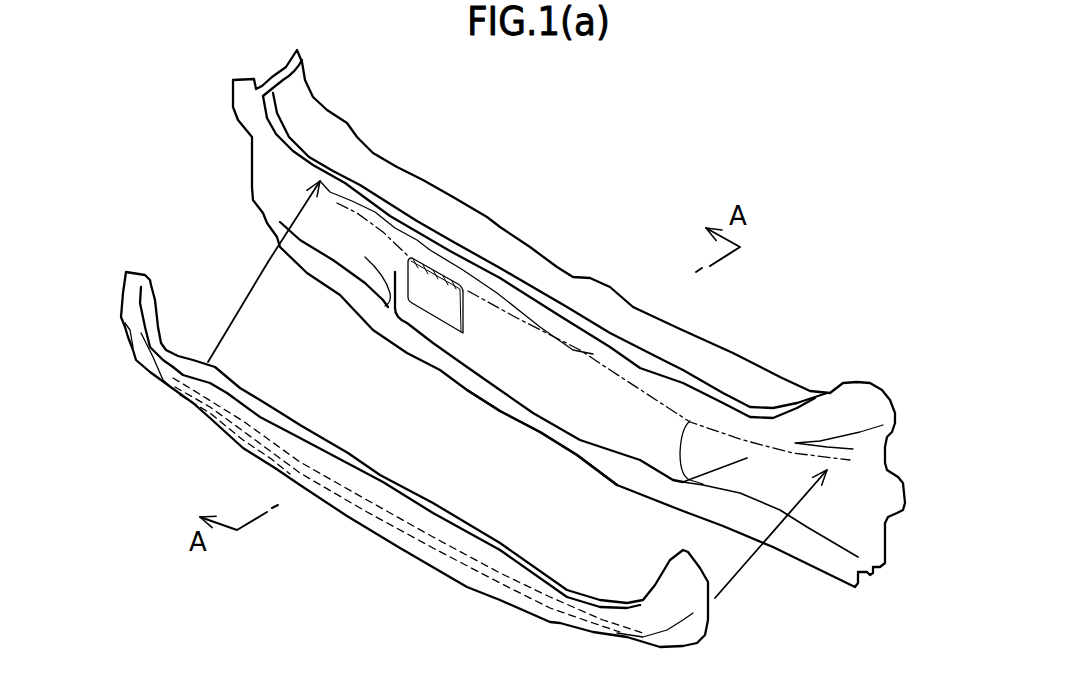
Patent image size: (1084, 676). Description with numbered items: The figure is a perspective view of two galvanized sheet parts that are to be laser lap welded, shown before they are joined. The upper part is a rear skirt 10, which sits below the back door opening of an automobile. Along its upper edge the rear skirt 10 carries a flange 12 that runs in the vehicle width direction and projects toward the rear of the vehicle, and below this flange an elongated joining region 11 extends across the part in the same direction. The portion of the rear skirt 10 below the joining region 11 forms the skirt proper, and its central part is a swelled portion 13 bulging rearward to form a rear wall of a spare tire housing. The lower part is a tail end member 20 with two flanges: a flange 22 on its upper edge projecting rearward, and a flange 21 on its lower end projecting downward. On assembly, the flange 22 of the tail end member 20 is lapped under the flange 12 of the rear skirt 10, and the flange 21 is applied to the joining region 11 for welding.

The rear skirt 10 is at (569, 318).
The joining region 11 is at (597, 353).
The flange 12 is at (588, 322).
The swelled portion 13 is at (607, 443).
The tail end member 20 is at (414, 459).
The flange 21 is at (463, 560).
The flange 22 is at (382, 483).